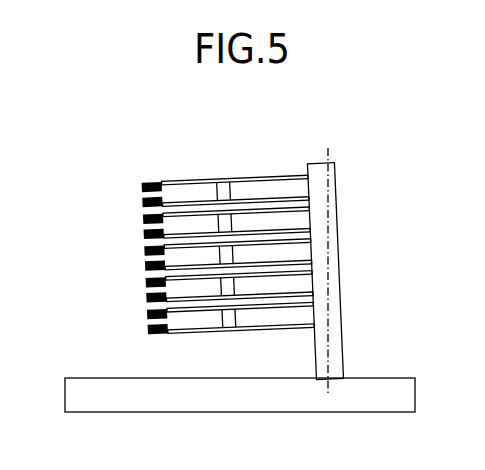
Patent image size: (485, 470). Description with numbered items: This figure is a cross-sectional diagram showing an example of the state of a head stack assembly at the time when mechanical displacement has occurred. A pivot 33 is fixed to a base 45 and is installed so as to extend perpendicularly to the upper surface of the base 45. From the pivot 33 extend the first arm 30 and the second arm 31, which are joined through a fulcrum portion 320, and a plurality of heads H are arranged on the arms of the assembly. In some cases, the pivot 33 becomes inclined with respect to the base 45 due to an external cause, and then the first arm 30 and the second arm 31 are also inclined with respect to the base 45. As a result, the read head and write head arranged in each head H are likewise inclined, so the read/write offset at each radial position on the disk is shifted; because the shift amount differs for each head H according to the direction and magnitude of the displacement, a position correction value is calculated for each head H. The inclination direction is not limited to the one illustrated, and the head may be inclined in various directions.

The head H is at (150, 180).
The second arm 31 is at (188, 178).
The fulcrum portion 320 is at (225, 177).
The first arm 30 is at (272, 174).
The pivot 33 is at (318, 163).
The base 45 is at (95, 378).